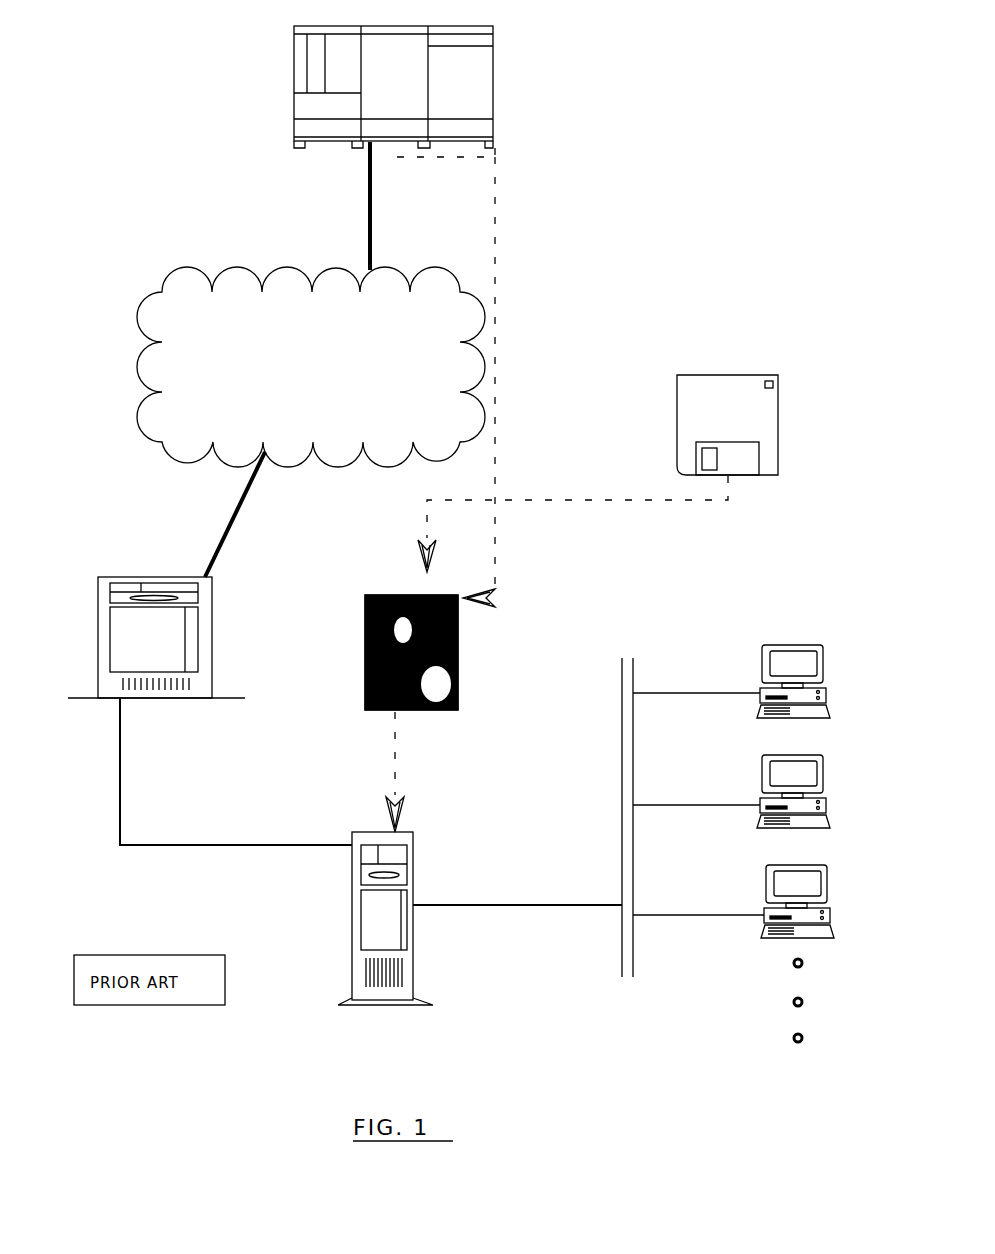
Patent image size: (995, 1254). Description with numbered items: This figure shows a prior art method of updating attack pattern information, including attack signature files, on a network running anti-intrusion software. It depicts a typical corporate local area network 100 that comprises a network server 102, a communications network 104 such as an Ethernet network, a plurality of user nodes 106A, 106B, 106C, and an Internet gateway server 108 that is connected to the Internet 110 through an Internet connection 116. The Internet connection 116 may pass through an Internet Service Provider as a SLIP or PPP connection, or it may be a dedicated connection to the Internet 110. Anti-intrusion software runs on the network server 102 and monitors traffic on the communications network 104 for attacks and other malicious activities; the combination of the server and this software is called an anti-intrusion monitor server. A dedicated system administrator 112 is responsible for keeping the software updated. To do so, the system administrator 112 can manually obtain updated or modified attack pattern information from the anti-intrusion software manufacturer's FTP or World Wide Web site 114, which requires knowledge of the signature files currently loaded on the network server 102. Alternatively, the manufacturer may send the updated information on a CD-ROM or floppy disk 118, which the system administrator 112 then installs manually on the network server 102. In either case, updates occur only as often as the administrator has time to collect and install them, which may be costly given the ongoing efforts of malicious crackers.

The corporate local area network 100 is at (189, 771).
The network server 102 is at (405, 918).
The communications network 104 is at (588, 817).
The user node 106A is at (818, 681).
The user node 106B is at (818, 791).
The user node 106C is at (822, 901).
The Internet gateway server 108 is at (170, 637).
The Internet 110 is at (282, 367).
The system administrator 112 is at (406, 632).
The FTP or World Wide Web site 114 is at (430, 87).
The Internet connection 116 is at (244, 514).
The floppy disk 118 is at (759, 425).